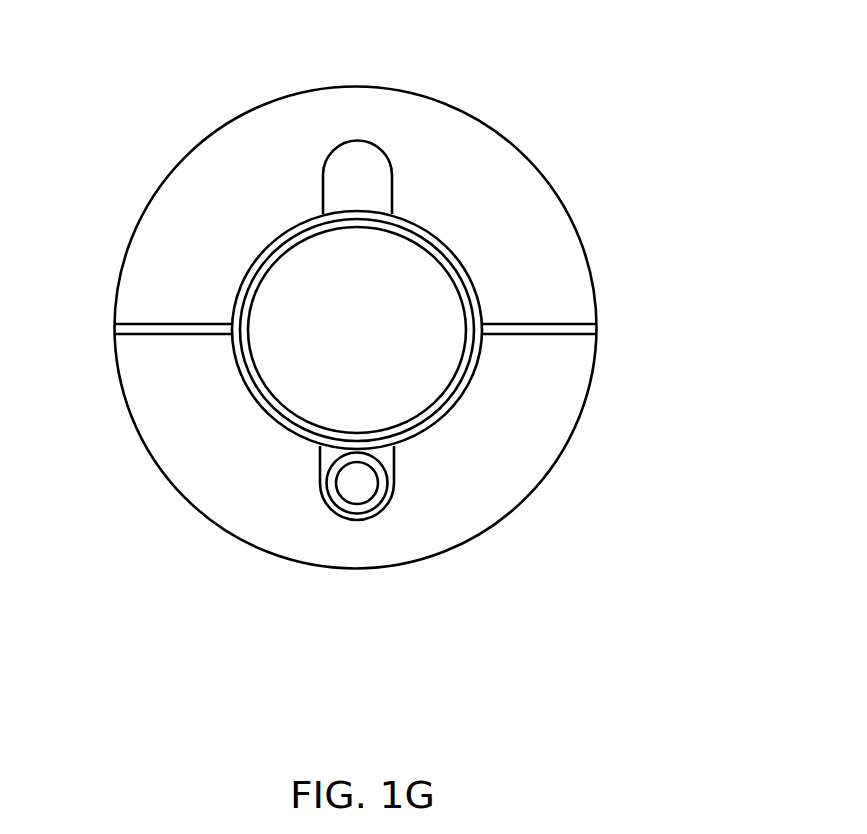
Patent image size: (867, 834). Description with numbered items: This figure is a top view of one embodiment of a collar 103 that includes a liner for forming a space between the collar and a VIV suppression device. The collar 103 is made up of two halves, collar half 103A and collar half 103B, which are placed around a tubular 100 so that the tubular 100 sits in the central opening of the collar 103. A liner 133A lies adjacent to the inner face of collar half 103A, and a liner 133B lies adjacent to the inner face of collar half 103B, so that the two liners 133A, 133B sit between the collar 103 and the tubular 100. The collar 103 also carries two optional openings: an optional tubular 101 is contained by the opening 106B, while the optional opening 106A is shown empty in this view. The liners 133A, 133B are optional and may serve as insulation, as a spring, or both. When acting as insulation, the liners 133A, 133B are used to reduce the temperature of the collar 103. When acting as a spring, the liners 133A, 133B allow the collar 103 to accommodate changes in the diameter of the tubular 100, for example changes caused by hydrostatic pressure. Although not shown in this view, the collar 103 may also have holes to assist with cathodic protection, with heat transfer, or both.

The tubular 100 is at (438, 252).
The tubular 101 is at (360, 516).
The collar 103 is at (222, 205).
The collar half 103A is at (536, 290).
The collar half 103B is at (538, 357).
The opening 106A is at (323, 172).
The opening 106B is at (328, 478).
The liner 133A is at (456, 262).
The liner 133B is at (453, 404).